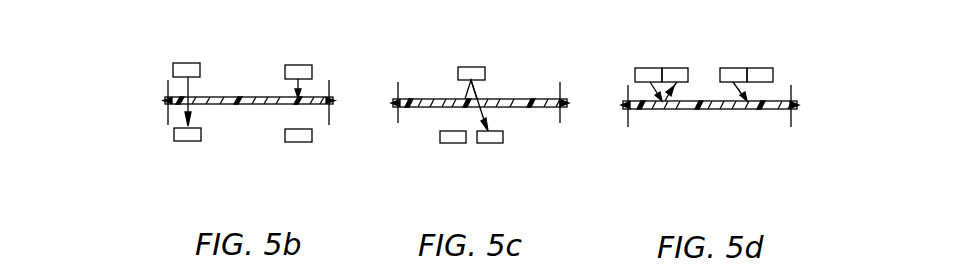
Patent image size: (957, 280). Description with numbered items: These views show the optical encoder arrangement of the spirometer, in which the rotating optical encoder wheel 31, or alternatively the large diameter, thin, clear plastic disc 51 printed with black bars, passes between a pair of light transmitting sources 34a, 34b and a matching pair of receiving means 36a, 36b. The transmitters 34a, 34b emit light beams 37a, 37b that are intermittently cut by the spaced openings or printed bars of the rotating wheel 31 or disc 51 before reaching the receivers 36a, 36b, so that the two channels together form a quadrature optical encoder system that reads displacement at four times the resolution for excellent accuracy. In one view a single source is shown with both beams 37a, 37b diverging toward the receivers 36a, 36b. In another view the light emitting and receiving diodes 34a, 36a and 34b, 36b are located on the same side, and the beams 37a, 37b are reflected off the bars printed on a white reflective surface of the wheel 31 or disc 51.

In FIG. 5b, the optical encoder wheel 31 is at (196, 75).
In FIG. 5c, the optical encoder wheel 31 is at (515, 137).
In FIG. 5d, the optical encoder wheel 31 is at (745, 140).
In FIG. 5b, the clear plastic disc 51 is at (174, 94).
In FIG. 5c, the clear plastic disc 51 is at (549, 104).
In FIG. 5d, the clear plastic disc 51 is at (782, 110).
In FIG. 5b, the light transmitting source 34a is at (187, 63).
In FIG. 5c, the light transmitting source 34a is at (445, 52).
In FIG. 5d, the light transmitting source 34a is at (645, 68).
In FIG. 5b, the light transmitting source 34b is at (337, 42).
In FIG. 5c, the light transmitting source 34b is at (457, 74).
In FIG. 5d, the light transmitting source 34b is at (740, 70).
In FIG. 5b, the receiving means 36a is at (200, 132).
In FIG. 5c, the receiving means 36a is at (457, 137).
In FIG. 5d, the receiving means 36a is at (683, 70).
In FIG. 5b, the receiving means 36b is at (285, 135).
In FIG. 5c, the receiving means 36b is at (500, 136).
In FIG. 5d, the receiving means 36b is at (768, 70).
In FIG. 5b, the light beam 37a is at (178, 101).
In FIG. 5c, the light beam 37a is at (517, 87).
In FIG. 5d, the light beam 37a is at (678, 93).
In FIG. 5b, the light beam 37b is at (297, 91).
In FIG. 5c, the light beam 37b is at (478, 94).
In FIG. 5d, the light beam 37b is at (752, 92).